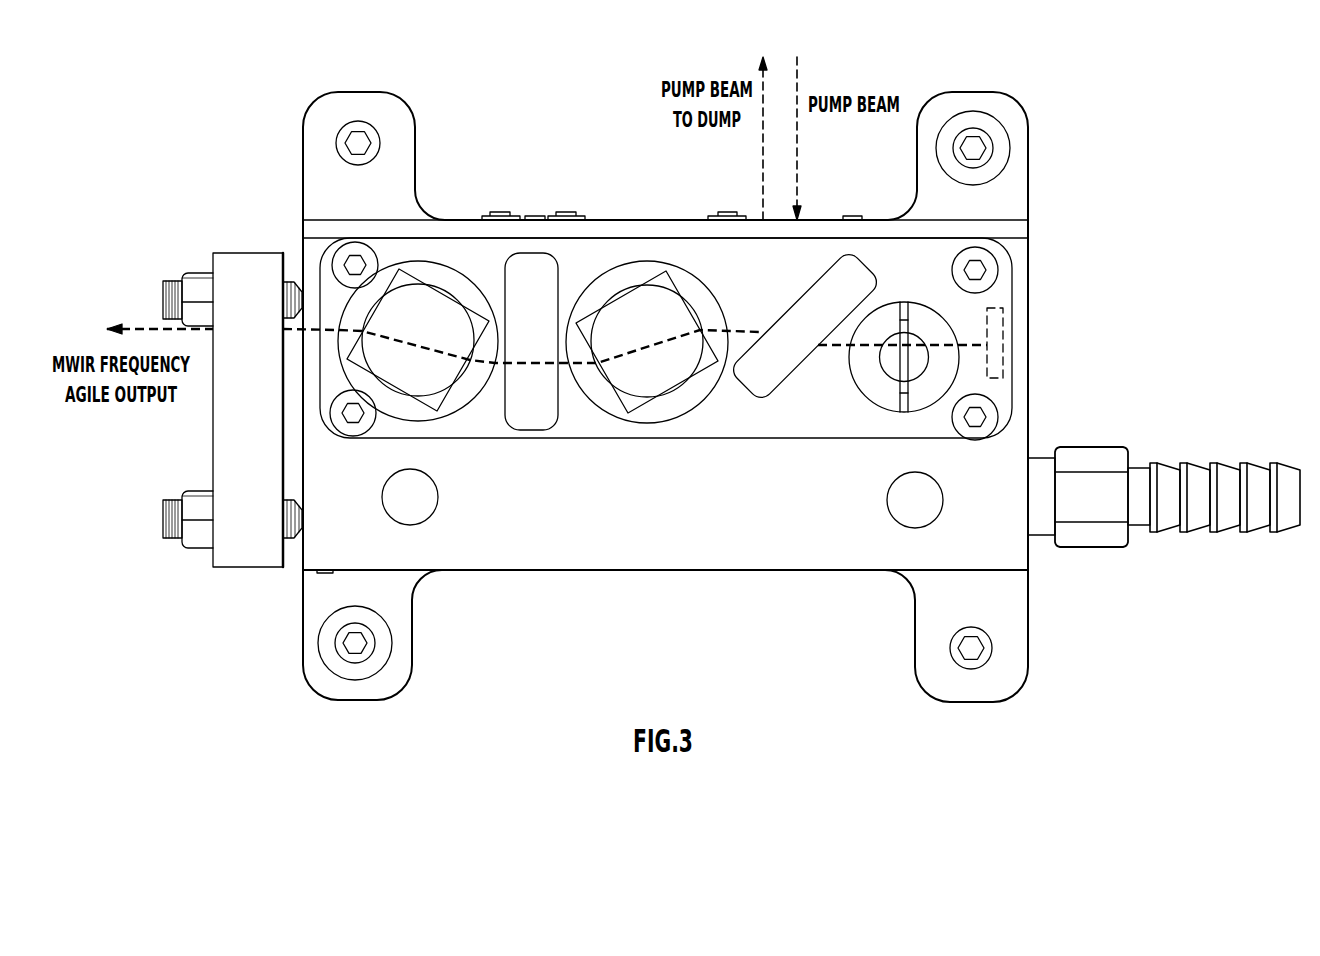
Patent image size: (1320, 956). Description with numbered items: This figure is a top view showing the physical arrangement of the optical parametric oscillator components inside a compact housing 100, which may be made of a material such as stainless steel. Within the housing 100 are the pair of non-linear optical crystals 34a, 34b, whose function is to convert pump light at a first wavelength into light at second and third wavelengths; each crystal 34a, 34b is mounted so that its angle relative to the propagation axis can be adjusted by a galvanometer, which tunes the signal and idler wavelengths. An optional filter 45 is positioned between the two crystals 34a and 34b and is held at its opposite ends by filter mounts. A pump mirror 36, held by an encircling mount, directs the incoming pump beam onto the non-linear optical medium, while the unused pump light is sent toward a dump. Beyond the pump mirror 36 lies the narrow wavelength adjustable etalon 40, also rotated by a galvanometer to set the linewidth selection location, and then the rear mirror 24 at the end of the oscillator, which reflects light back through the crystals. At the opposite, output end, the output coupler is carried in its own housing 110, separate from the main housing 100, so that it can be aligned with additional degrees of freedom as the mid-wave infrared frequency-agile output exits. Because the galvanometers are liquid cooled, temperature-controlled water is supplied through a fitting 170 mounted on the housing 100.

The housing 100 is at (697, 571).
The housing 110 is at (250, 253).
The non-linear optical crystal 34a is at (430, 306).
The non-linear optical crystal 34b is at (638, 303).
The filter 45 is at (532, 270).
The pump mirror 36 is at (823, 268).
The etalon 40 is at (953, 330).
The rear mirror 24 is at (1003, 337).
The fitting 170 is at (1197, 467).